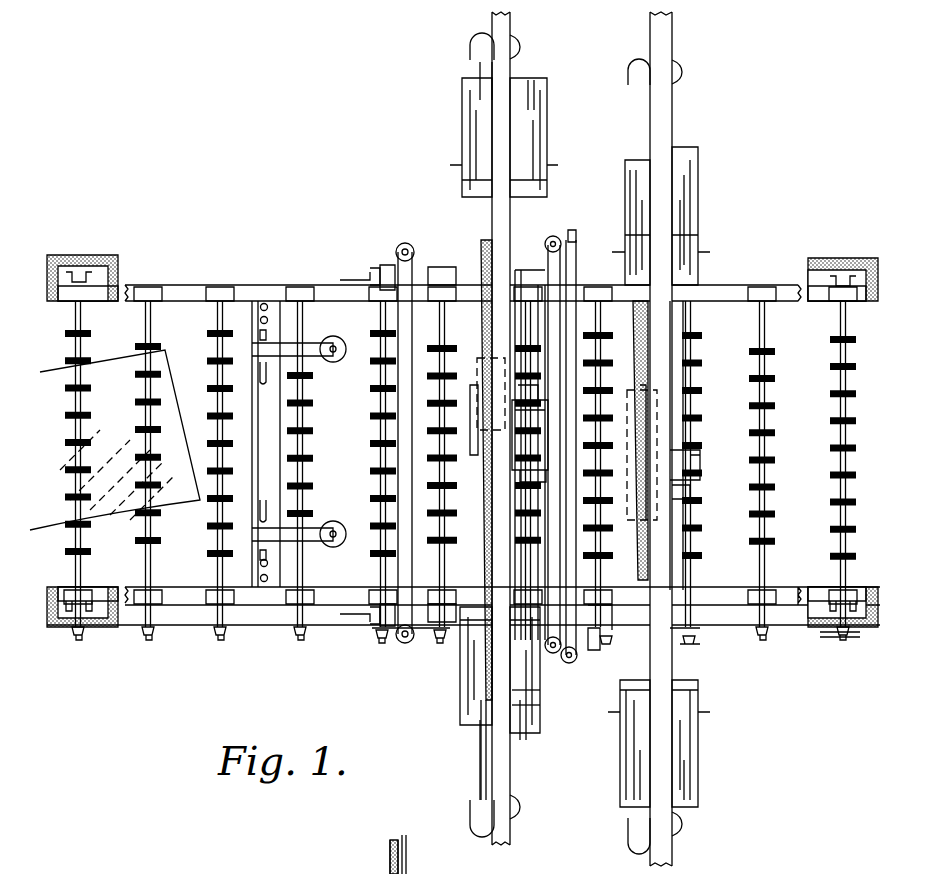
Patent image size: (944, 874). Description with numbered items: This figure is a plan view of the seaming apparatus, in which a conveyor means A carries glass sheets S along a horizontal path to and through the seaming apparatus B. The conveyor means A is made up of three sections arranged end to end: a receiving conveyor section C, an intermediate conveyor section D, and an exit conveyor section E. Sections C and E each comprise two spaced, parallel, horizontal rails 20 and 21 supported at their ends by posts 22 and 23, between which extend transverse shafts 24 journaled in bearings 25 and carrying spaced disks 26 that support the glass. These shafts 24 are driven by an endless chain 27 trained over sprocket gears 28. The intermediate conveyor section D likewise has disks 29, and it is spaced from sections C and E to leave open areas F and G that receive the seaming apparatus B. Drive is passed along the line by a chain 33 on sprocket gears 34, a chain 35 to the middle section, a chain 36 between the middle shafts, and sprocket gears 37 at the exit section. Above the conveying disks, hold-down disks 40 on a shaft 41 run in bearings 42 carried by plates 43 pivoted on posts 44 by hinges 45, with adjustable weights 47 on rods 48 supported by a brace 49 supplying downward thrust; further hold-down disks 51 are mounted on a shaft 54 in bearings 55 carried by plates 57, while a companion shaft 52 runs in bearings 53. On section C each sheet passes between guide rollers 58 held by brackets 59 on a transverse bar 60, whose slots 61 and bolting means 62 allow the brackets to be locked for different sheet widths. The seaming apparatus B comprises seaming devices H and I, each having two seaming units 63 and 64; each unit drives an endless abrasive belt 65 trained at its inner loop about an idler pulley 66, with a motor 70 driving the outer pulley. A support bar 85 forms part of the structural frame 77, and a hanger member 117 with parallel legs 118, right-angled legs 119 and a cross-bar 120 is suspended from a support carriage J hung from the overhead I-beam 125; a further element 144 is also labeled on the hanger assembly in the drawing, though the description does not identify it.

The horizontal rail 20 is at (132, 595).
The horizontal rail 21 is at (192, 285).
The post 22 is at (72, 620).
The post 23 is at (76, 280).
The shaft 24 is at (218, 347).
The bearing 25 is at (140, 287).
The disk 26 is at (222, 527).
The endless chain 27 is at (176, 627).
The sprocket gear 28 is at (148, 640).
The disk 29 is at (526, 548).
The chain 33 is at (396, 650).
The sprocket gear 34 is at (378, 645).
The chain 35 is at (470, 285).
The chain 36 is at (607, 638).
The sprocket gear 37 is at (606, 648).
The hold-down disk 40 is at (445, 484).
The shaft 41 is at (440, 542).
The bearing 42 is at (440, 270).
The plate 43 is at (388, 268).
The post 44 is at (362, 278).
The hinge 45 is at (370, 270).
The adjustable weight 47 is at (398, 250).
The rod 48 is at (396, 250).
The brace 49 is at (398, 398).
The hold-down disk 51 is at (603, 372).
The shaft 52 is at (524, 313).
The bearing 53 is at (552, 236).
The shaft 54 is at (587, 447).
The bearing 55 is at (578, 246).
The plate 57 is at (570, 664).
The guide roller 58 is at (337, 338).
The bracket 59 is at (308, 350).
The transverse bar 60 is at (262, 416).
The slot 61 is at (262, 392).
The bolting means 62 is at (258, 307).
The seaming unit 63 is at (692, 146).
The seaming unit 64 is at (460, 200).
The abrasive belt 65 is at (486, 226).
The pulley 66 is at (476, 402).
The motor 70 is at (486, 62).
The structural frame 77 is at (522, 690).
The support bar 85 is at (520, 705).
The hanger member 117 is at (462, 104).
The leg 118 is at (478, 92).
The leg 119 is at (466, 128).
The cross-bar 120 is at (532, 190).
The I-beam 125 is at (514, 28).
The stud 144 is at (452, 165).
The conveyor means A is at (180, 240).
The seaming apparatus B is at (310, 200).
The receiving conveyor section C is at (275, 270).
The intermediate conveyor section D is at (578, 246).
The exit conveyor section E is at (770, 250).
The open area F is at (466, 336).
The open area G is at (628, 336).
The seaming device H is at (436, 183).
The seaming device I is at (685, 112).
The support carriage J is at (536, 208).
The glass sheet S is at (120, 392).